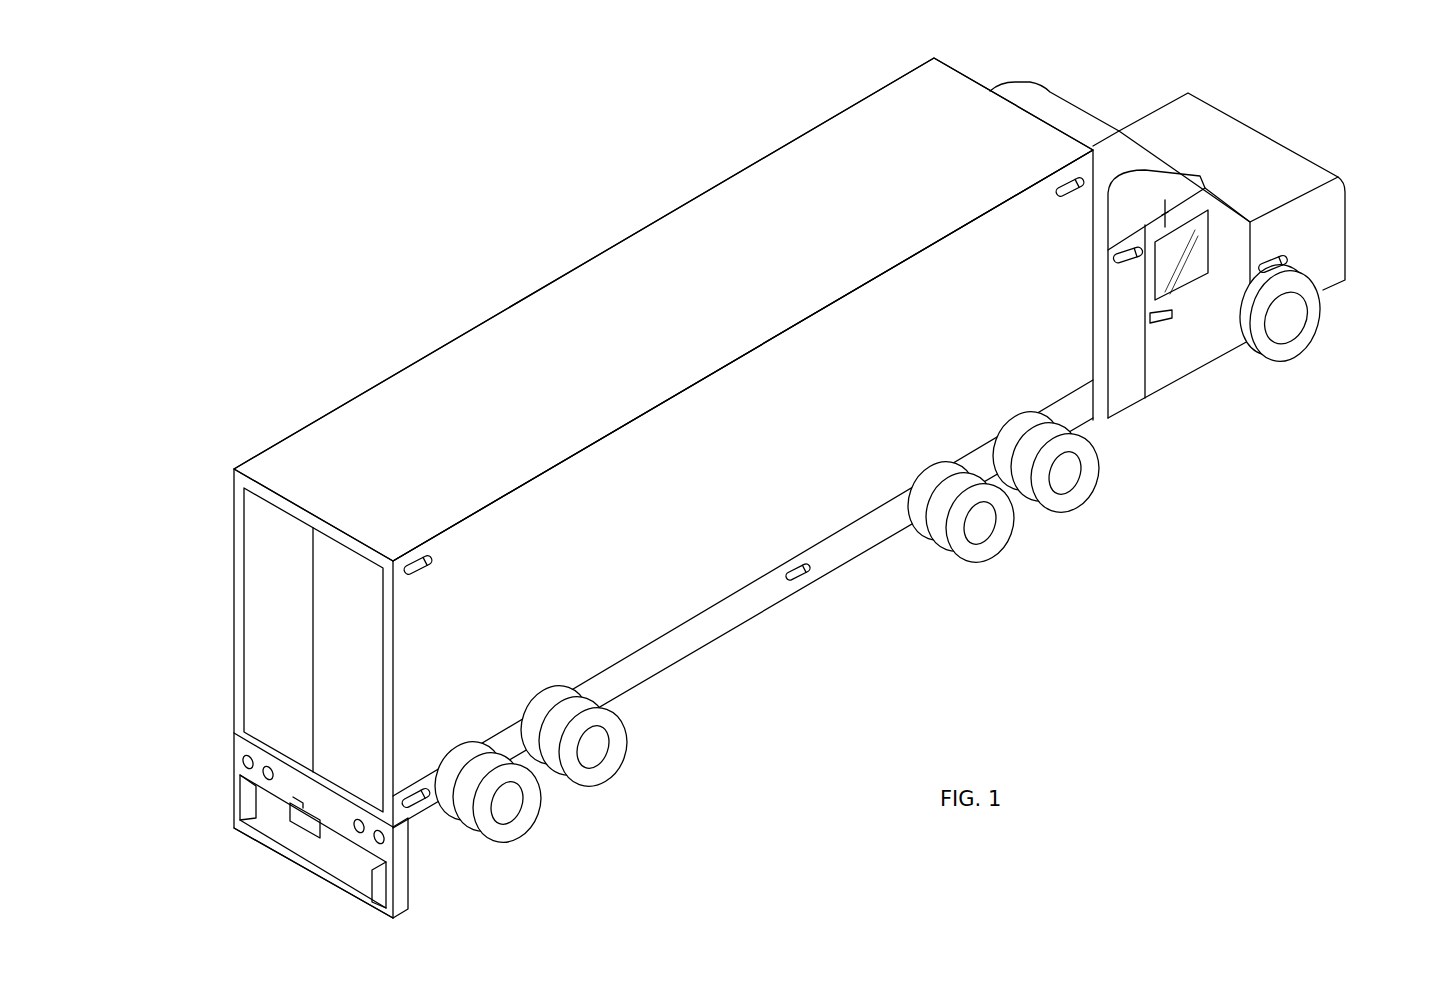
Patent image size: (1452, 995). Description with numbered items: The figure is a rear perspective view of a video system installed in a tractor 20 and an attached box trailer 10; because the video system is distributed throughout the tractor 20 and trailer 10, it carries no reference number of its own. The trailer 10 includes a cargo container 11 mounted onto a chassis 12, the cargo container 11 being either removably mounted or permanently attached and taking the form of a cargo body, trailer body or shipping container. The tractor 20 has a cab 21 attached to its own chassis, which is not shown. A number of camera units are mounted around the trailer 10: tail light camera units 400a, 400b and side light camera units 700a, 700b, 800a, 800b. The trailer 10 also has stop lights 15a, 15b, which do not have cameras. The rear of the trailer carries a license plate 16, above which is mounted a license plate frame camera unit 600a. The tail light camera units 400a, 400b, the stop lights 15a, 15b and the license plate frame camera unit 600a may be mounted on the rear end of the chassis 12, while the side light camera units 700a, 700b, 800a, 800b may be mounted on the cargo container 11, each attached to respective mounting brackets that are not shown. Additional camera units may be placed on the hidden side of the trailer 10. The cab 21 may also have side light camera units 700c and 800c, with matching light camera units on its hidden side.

The box trailer 10 is at (330, 330).
The cargo container 11 is at (522, 320).
The chassis 12 is at (735, 634).
The stop light 15a is at (238, 775).
The stop light 15b is at (356, 825).
The license plate 16 is at (290, 800).
The tractor 20 is at (1322, 131).
The cab 21 is at (1222, 326).
The tail light camera unit 400a is at (234, 738).
The tail light camera unit 400b is at (382, 840).
The license plate frame camera unit 600a is at (292, 810).
The side light camera unit 700a is at (433, 574).
The side light camera unit 700b is at (1074, 196).
The side light camera unit 700c is at (1128, 262).
The side light camera unit 800a is at (430, 800).
The side light camera unit 800b is at (806, 576).
The side light camera unit 800c is at (1290, 262).